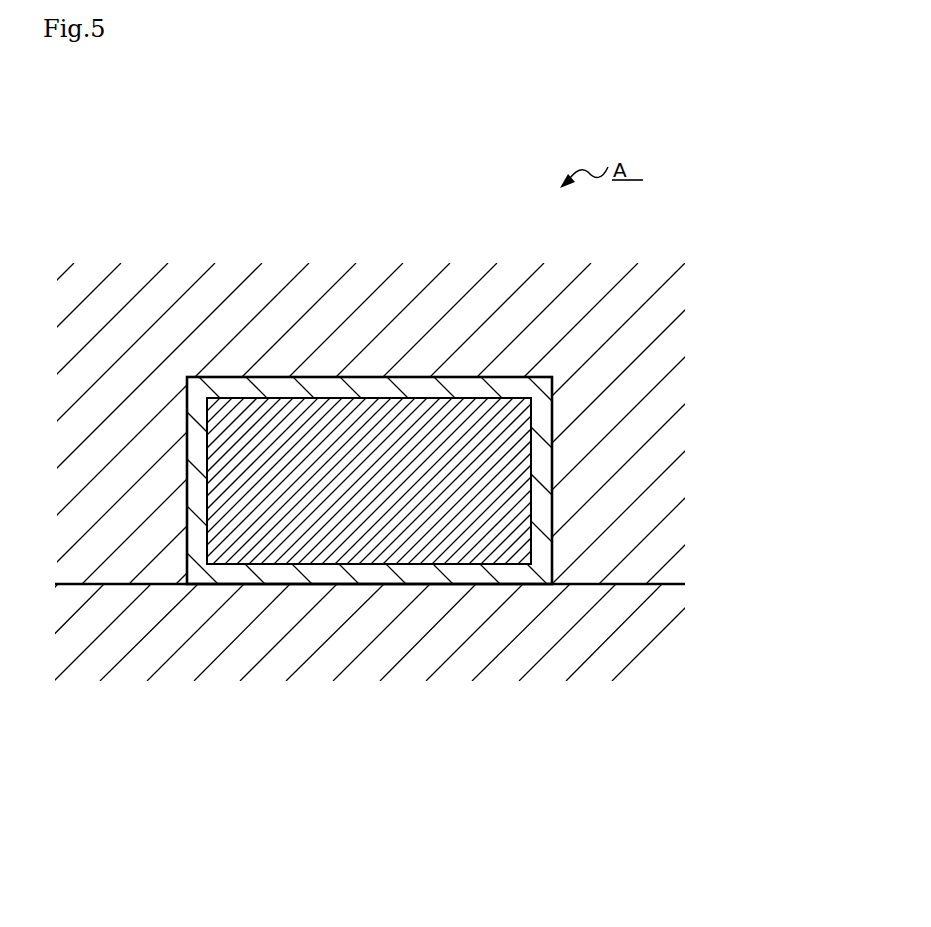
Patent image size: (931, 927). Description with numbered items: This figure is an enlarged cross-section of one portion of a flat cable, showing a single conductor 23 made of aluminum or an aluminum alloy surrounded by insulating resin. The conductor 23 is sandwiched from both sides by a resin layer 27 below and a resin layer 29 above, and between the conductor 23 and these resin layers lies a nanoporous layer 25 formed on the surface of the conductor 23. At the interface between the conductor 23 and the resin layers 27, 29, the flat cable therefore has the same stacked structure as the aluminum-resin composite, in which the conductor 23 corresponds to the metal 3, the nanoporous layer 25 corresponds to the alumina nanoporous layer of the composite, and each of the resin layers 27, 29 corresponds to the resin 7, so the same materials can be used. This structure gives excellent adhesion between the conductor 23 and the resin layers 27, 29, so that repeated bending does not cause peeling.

The resin layer 29 is at (327, 318).
The resin layer 27 is at (445, 650).
The resin 7 is at (465, 481).
The nanoporous layer 25 is at (545, 480).
The conductor 23 is at (507, 432).
The metal 3 is at (417, 463).